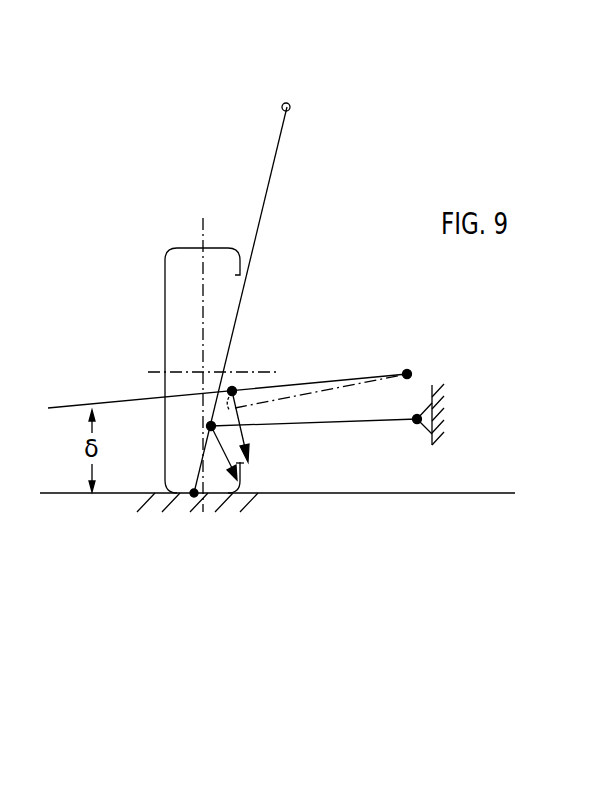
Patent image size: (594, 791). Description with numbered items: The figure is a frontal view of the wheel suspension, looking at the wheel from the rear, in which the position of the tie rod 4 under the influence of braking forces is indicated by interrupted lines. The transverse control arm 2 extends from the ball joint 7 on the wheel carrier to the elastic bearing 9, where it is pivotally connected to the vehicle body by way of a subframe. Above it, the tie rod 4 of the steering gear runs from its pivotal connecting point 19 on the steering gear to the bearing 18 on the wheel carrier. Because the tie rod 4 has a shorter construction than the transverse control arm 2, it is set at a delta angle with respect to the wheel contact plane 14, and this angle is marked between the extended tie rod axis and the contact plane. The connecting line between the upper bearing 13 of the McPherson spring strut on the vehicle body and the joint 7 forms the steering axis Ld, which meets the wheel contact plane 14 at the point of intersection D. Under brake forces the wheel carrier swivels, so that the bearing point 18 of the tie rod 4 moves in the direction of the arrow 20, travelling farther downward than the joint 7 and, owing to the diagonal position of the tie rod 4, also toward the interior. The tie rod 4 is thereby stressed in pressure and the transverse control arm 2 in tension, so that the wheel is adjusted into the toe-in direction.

The transverse control arm 2 is at (340, 421).
The tie rod 4 is at (298, 382).
The ball joint 7 is at (207, 426).
The elastic bearing 9 is at (415, 423).
The bearing 13 is at (291, 107).
The wheel contact plane 14 is at (67, 497).
The bearing 18 is at (235, 372).
The pivotal connecting point 19 is at (411, 371).
The arrow 20 is at (240, 418).
The point of intersection D is at (192, 497).
The steering axis Ld is at (270, 165).